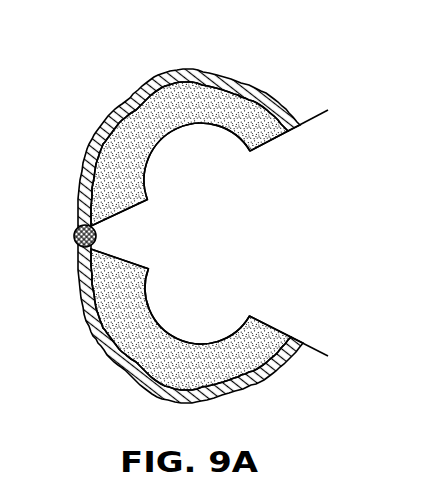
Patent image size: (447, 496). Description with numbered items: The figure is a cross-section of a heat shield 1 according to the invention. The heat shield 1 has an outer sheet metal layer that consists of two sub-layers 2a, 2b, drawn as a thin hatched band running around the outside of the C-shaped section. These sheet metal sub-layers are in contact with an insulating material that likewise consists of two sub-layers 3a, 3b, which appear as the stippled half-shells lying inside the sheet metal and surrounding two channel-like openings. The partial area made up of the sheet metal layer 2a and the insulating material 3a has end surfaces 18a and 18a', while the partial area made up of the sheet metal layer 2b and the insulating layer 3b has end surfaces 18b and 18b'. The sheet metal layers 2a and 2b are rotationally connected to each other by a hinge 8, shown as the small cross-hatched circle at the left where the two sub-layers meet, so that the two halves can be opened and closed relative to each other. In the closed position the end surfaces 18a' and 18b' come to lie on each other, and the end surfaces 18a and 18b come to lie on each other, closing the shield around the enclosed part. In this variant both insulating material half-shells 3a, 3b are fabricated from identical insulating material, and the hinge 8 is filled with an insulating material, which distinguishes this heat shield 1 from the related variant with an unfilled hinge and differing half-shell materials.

The heat shield 1 is at (196, 70).
The sheet metal sub-layer 2a is at (118, 103).
The sheet metal sub-layer 2b is at (114, 360).
The insulating material half-shell 3a is at (146, 147).
The insulating material half-shell 3b is at (165, 348).
The hinge 8 is at (74, 236).
The end surface 18a is at (291, 141).
The end surface 18b is at (289, 317).
The end surface 18a' is at (145, 215).
The end surface 18b' is at (146, 258).